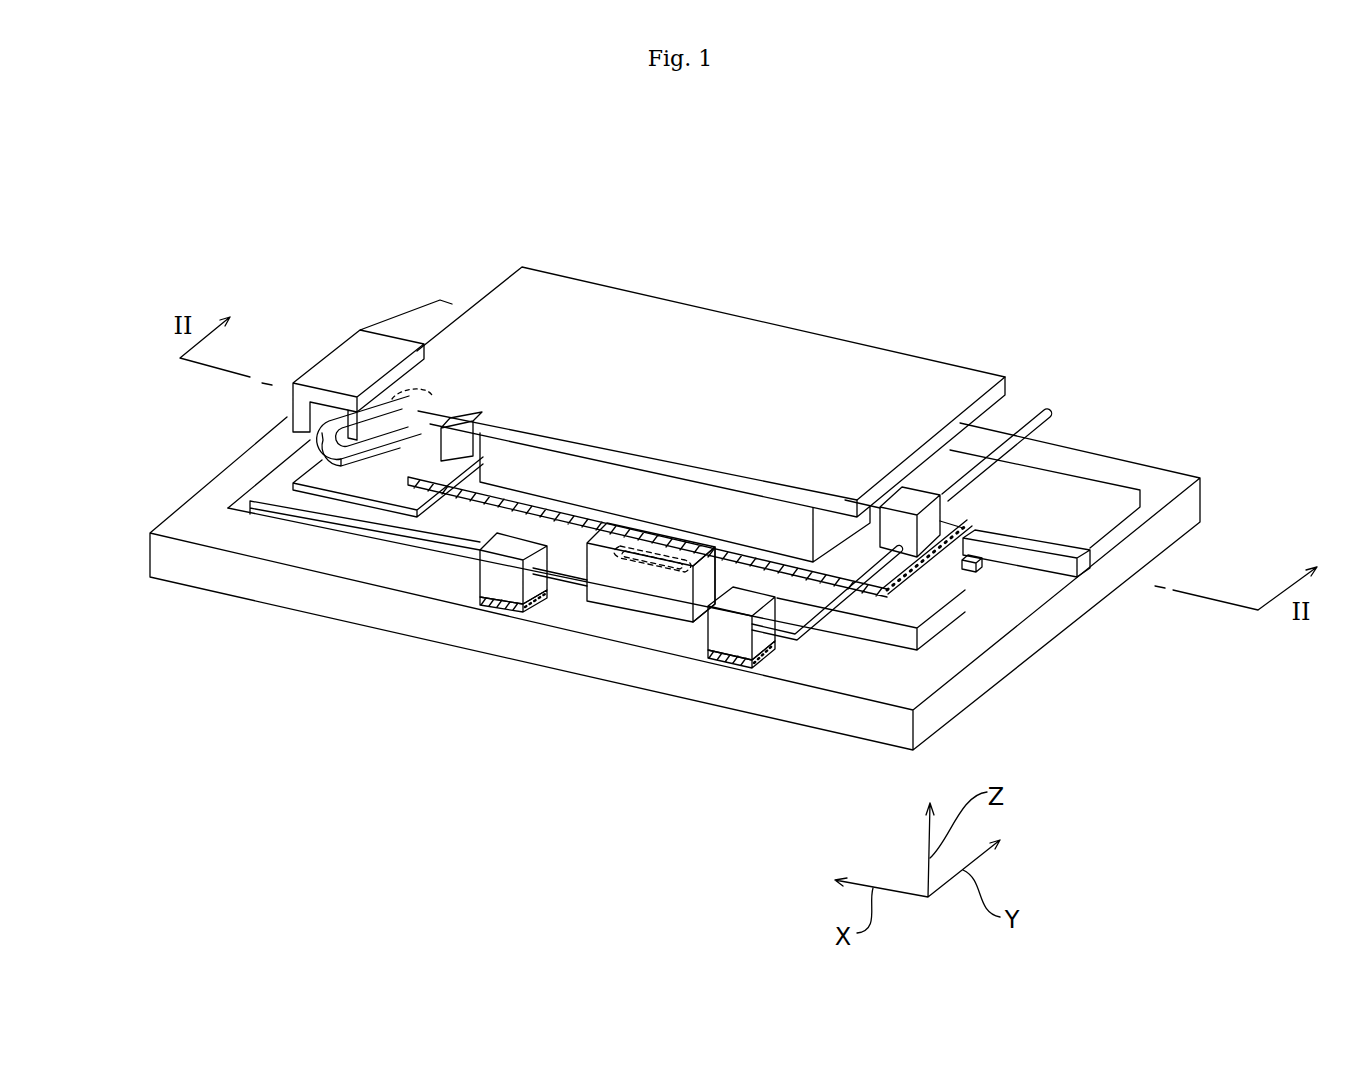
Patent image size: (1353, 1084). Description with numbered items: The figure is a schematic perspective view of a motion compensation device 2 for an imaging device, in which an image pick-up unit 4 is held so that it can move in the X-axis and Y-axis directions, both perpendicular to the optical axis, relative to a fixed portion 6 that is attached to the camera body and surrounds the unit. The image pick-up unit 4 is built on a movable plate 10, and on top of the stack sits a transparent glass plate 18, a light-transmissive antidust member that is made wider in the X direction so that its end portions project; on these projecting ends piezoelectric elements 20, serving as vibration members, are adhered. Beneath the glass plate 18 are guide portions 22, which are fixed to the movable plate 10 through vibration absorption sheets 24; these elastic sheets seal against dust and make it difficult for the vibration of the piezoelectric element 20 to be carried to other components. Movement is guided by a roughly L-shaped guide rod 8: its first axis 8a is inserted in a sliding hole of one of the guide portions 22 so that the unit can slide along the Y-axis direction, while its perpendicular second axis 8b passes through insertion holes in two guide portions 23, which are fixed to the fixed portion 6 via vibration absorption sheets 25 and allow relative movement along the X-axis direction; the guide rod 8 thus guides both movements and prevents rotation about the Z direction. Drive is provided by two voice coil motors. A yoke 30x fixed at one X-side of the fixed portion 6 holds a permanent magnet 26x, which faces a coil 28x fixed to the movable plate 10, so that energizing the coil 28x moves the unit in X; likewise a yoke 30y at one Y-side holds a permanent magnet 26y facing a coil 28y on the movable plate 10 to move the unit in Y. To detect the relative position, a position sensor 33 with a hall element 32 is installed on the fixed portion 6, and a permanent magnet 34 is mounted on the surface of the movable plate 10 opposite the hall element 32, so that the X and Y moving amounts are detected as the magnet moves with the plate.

The motion compensation device 2 is at (845, 276).
The image pick-up unit 4 is at (917, 345).
The fixed portion 6 is at (1110, 467).
The guide rod 8 is at (963, 443).
The first axis 8a is at (1010, 463).
The second axis 8b is at (295, 528).
The movable plate 10 is at (1027, 527).
The glass plate 18 is at (557, 317).
The piezoelectric element 20 is at (1033, 407).
The guide portion 22 is at (943, 547).
The guide portion 23 is at (500, 578).
The vibration absorption sheet 24 is at (923, 530).
The vibration absorption sheet 25 is at (548, 605).
The permanent magnet 26x is at (703, 605).
The permanent magnet 26y is at (328, 413).
The coil 28x is at (630, 612).
The coil 28y is at (327, 463).
The yoke 30x is at (615, 598).
The yoke 30y is at (343, 373).
The hall element 32 is at (985, 565).
The position sensor 33 is at (1063, 547).
The permanent magnet 34 is at (990, 550).